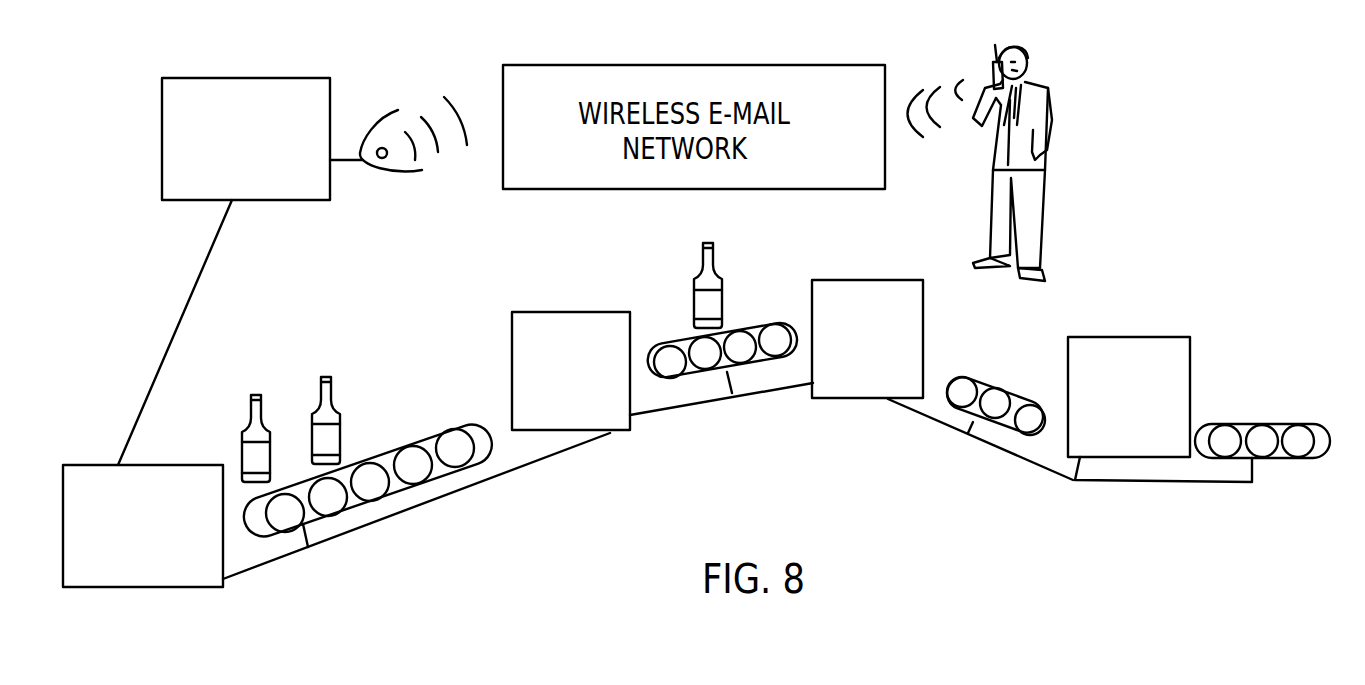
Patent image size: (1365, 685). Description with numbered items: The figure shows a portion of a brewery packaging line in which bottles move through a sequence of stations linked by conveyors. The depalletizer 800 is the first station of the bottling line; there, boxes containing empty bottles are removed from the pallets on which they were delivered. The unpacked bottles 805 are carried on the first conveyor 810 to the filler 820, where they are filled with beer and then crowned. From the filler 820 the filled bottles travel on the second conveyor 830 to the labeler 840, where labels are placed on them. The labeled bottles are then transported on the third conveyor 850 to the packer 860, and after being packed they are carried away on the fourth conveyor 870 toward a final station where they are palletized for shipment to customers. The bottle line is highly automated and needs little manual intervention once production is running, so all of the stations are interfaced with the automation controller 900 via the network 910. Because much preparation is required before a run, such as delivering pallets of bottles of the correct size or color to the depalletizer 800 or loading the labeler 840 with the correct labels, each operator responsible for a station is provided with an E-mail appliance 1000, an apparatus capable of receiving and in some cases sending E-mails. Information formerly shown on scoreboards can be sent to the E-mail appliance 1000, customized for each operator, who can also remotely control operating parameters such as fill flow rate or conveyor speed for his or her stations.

The depalletizer 800 is at (140, 587).
The bottles 805 is at (335, 408).
The first conveyor 810 is at (399, 448).
The filler 820 is at (623, 432).
The second conveyor 830 is at (748, 329).
The labeler 840 is at (848, 399).
The third conveyor 850 is at (985, 385).
The packer 860 is at (1145, 337).
The fourth conveyor 870 is at (1224, 423).
The automation controller 900 is at (162, 134).
The network 910 is at (198, 285).
The E-mail appliance 1000 is at (996, 55).